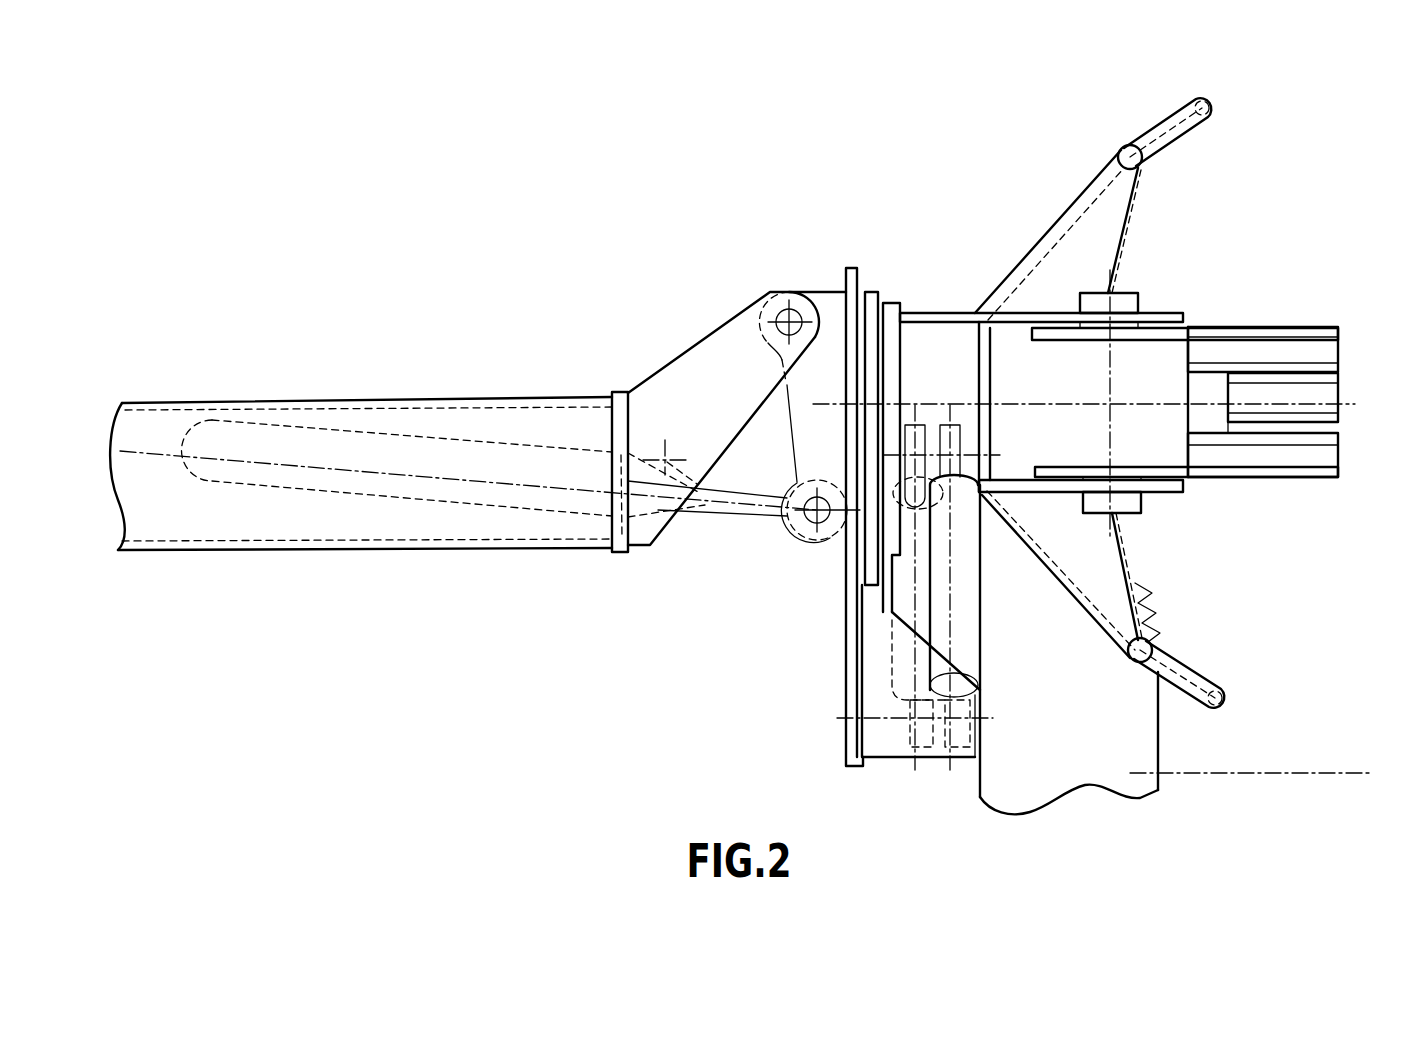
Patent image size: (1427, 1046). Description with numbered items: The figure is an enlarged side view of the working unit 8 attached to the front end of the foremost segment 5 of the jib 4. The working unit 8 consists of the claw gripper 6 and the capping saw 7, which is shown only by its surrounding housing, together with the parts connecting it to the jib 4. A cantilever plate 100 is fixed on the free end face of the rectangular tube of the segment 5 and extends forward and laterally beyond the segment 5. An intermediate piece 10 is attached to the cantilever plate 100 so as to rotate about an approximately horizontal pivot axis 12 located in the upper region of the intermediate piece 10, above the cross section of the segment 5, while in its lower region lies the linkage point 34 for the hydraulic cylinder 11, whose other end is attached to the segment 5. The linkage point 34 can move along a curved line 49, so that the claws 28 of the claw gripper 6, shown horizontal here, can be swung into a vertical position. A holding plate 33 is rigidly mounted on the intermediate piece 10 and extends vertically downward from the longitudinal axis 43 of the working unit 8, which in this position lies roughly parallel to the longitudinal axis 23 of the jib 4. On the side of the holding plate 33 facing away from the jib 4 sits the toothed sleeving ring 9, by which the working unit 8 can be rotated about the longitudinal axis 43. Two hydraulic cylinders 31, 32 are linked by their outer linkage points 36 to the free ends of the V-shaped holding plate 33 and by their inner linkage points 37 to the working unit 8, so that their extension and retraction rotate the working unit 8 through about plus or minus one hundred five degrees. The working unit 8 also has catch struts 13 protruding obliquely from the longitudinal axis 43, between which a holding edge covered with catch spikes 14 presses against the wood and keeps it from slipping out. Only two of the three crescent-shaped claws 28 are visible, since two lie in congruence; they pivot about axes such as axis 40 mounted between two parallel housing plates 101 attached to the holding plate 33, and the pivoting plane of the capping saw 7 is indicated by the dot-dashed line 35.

The jib 4 is at (463, 507).
The foremost segment 5 is at (323, 550).
The claw gripper 6 is at (1158, 360).
The capping saw 7 is at (1090, 757).
The working unit 8 is at (1117, 381).
The toothed sleeving ring 9 is at (874, 296).
The intermediate piece 10 is at (837, 392).
The hydraulic cylinder 11 is at (387, 436).
The pivot axis 12 is at (786, 310).
The catch struts 13 is at (1168, 128).
The catch spikes 14 is at (1163, 612).
The longitudinal axis of the jib 23 is at (148, 452).
The claws 28 is at (1340, 350).
The hydraulic cylinder 31 is at (892, 671).
The hydraulic cylinder 32 is at (985, 648).
The holding plate 33 is at (897, 742).
The linkage point 34 is at (815, 522).
The dot-dashed line 35 is at (1290, 773).
The outer linkage points 36 is at (838, 720).
The inner linkage points 37 is at (983, 530).
The axis 40 is at (1110, 388).
The longitudinal axis of the working unit 43 is at (1014, 402).
The curved line 49 is at (766, 512).
The cantilever plate 100 is at (676, 359).
The housing plates 101 is at (943, 315).